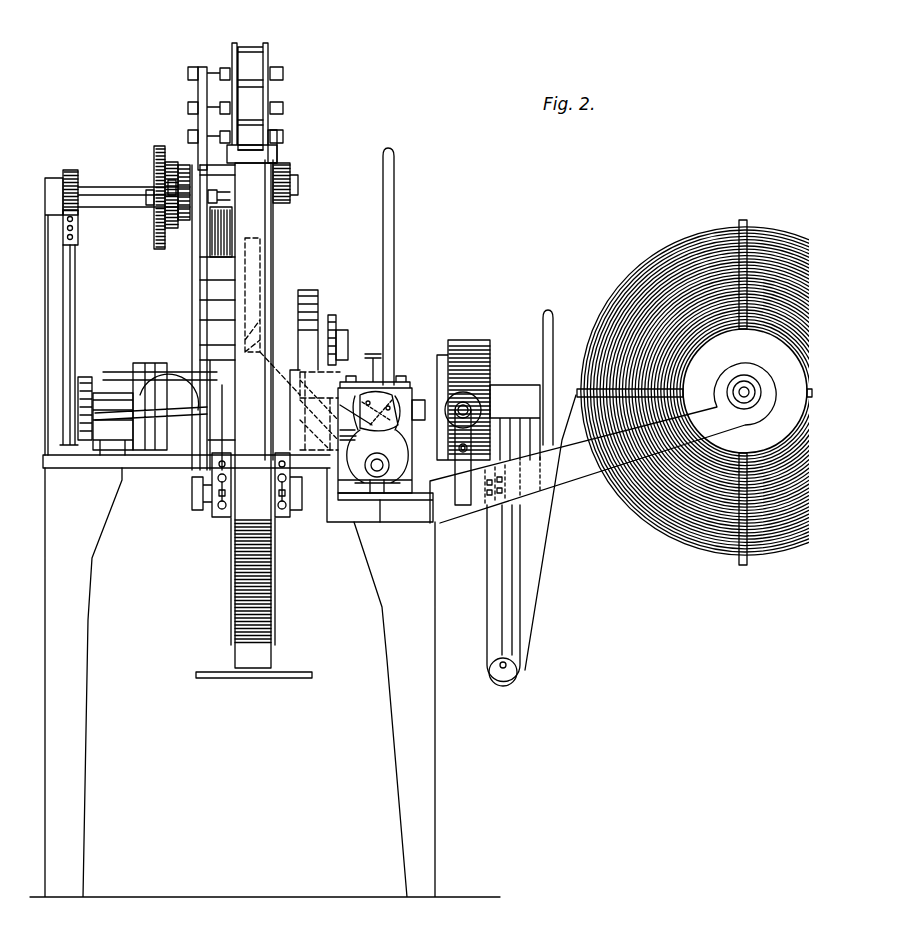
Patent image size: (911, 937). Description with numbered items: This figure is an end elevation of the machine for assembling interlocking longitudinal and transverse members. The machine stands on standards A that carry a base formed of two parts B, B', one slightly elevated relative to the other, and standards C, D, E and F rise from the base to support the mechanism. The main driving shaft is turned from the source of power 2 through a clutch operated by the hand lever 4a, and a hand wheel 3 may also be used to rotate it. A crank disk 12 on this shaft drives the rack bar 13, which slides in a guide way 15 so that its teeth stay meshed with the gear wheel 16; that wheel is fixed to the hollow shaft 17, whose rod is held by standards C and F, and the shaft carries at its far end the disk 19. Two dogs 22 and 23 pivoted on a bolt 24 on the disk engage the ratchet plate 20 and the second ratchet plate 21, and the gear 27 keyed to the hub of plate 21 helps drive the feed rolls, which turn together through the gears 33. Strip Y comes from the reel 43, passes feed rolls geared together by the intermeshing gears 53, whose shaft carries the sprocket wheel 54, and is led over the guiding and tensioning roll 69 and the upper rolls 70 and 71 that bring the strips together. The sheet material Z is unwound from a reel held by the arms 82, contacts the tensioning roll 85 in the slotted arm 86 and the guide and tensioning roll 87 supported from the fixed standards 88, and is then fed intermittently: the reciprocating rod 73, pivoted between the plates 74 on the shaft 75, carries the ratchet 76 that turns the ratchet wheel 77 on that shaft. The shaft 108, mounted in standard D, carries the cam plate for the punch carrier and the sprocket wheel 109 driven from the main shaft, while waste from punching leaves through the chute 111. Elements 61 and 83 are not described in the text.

The source of power 2 is at (458, 345).
The hand wheel 3 is at (553, 333).
The hand lever 4a is at (392, 228).
The crank disk 12 is at (84, 378).
The rack bar 13 is at (72, 312).
The guide way 15 is at (78, 240).
The gear wheel 16 is at (72, 170).
The hollow shaft 17 is at (96, 192).
The disk 19 is at (155, 160).
The ratchet plate 20 is at (212, 262).
The second ratchet plate 21 is at (176, 228).
The dog 22 is at (170, 163).
The dog 23 is at (176, 178).
The bolt or shaft 24 is at (148, 180).
The gear 27 is at (185, 225).
The gears 33 is at (300, 178).
The reel 43 is at (265, 345).
The intermeshing gears 53 is at (296, 505).
The sprocket wheel 54 is at (192, 500).
The frame bracket 61 is at (280, 150).
The guiding and tensioning roll 69 is at (245, 122).
The guiding and tensioning roll 70 is at (263, 48).
The guiding and tensioning roll 71 is at (243, 90).
The reciprocating rod 73 is at (170, 378).
The plates 74 is at (376, 421).
The shaft 75 is at (365, 465).
The ratchet 76 is at (405, 430).
The ratchet wheel 77 is at (405, 474).
The arms 82 is at (580, 468).
The reel shaft 83 is at (762, 400).
The tensioning roll 85 is at (518, 676).
The slotted arm 86 is at (503, 590).
The guide and tensioning roll 87 is at (472, 400).
The fixed standards 88 is at (465, 477).
The shaft 108 is at (360, 345).
The sprocket wheel 109 is at (336, 330).
The chute 111 is at (355, 409).
The standards A is at (84, 695).
The base part B is at (227, 482).
The base part B' is at (403, 530).
The standard C is at (190, 302).
The standard D is at (189, 317).
The standard E is at (308, 312).
The standard F is at (50, 340).
The longitudinal member strip Y is at (254, 420).
The sheet material Z is at (545, 555).